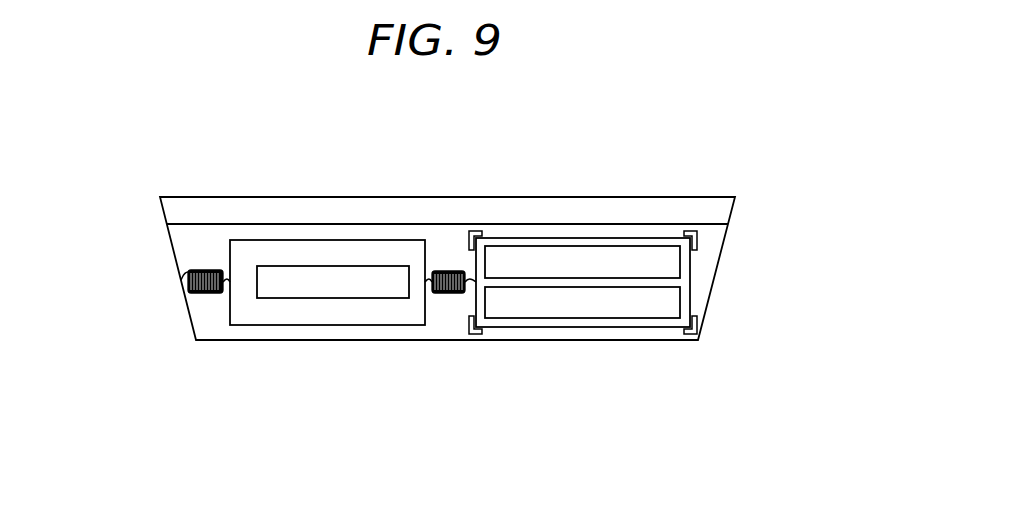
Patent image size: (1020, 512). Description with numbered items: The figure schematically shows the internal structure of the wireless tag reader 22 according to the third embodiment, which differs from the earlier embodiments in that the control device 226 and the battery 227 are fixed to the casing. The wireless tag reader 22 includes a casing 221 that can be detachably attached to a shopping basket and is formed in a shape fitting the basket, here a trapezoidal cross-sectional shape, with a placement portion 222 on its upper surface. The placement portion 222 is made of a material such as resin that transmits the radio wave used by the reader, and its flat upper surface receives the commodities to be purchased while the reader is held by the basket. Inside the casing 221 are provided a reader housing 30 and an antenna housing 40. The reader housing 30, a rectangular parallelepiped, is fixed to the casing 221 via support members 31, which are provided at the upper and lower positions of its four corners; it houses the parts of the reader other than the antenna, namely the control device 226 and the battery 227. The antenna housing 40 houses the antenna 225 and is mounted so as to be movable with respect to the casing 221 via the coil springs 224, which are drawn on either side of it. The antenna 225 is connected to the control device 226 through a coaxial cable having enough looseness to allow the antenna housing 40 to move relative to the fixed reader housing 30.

The wireless tag reader 22 is at (752, 145).
The casing 221 is at (172, 247).
The placement portion 222 is at (392, 210).
The coil spring 224 is at (187, 282).
The antenna 225 is at (313, 266).
The control device 226 is at (630, 246).
The battery 227 is at (620, 318).
The reader housing 30 is at (518, 327).
The support member 31 is at (695, 333).
The antenna housing 40 is at (313, 326).